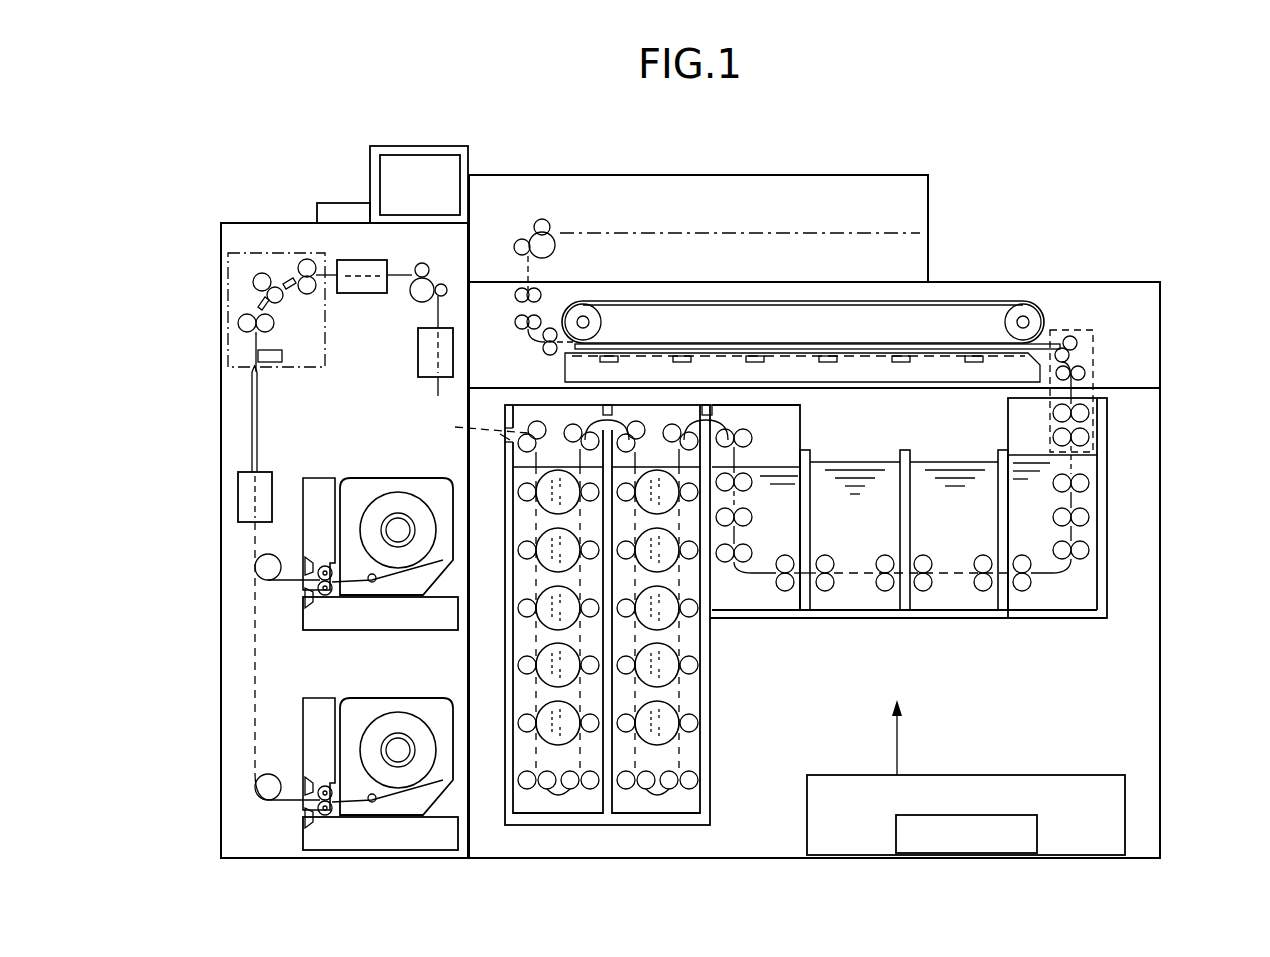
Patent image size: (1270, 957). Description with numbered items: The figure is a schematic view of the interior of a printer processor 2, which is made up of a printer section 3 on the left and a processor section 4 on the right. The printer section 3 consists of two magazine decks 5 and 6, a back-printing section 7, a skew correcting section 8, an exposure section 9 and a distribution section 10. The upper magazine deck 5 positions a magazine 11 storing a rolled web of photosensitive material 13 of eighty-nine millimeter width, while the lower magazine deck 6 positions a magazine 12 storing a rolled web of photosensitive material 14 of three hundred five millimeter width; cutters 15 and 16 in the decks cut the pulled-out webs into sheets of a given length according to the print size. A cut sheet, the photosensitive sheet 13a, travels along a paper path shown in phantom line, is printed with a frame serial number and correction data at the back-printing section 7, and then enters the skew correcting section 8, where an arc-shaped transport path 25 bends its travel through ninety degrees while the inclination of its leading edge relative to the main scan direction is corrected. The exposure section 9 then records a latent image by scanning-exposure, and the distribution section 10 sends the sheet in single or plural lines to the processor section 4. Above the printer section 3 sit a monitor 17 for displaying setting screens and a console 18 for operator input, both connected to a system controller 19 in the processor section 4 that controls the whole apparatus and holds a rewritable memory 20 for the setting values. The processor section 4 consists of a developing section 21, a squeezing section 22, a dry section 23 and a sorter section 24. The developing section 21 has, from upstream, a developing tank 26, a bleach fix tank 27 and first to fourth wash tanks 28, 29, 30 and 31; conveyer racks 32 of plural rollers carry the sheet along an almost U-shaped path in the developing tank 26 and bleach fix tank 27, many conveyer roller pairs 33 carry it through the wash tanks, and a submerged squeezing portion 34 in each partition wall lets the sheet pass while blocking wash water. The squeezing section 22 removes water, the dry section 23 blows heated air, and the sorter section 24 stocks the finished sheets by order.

The printer processor 2 is at (818, 152).
The printer section 3 is at (262, 215).
The processor section 4 is at (897, 172).
The magazine deck 5 is at (318, 478).
The magazine deck 6 is at (318, 698).
The back-printing section 7 is at (238, 497).
The skew correcting section 8 is at (228, 297).
The exposure section 9 is at (355, 293).
The distribution section 10 is at (418, 355).
The magazine 11 is at (414, 478).
The magazine 12 is at (414, 698).
The photosensitive material 13 is at (380, 498).
The photosensitive sheet 13a is at (252, 418).
The photosensitive material 14 is at (380, 718).
The cutter 15 is at (305, 597).
The cutter 16 is at (305, 814).
The monitor 17 is at (423, 153).
The console 18 is at (343, 203).
The system controller 19 is at (1085, 775).
The memory 20 is at (1037, 838).
The developing section 21 is at (1162, 815).
The squeezing section 22 is at (1093, 370).
The dry section 23 is at (1096, 286).
The sorter section 24 is at (908, 203).
The arc-shaped transport path 25 is at (253, 538).
The developing tank 26 is at (563, 810).
The bleach fix tank 27 is at (660, 810).
The first wash tank 28 is at (758, 598).
The second wash tank 29 is at (857, 497).
The third wash tank 30 is at (955, 495).
The fourth wash tank 31 is at (1055, 598).
The conveyer rack 32 is at (657, 727).
The conveyer roller pair 33 is at (790, 590).
The submerged squeezing portion 34 is at (830, 590).